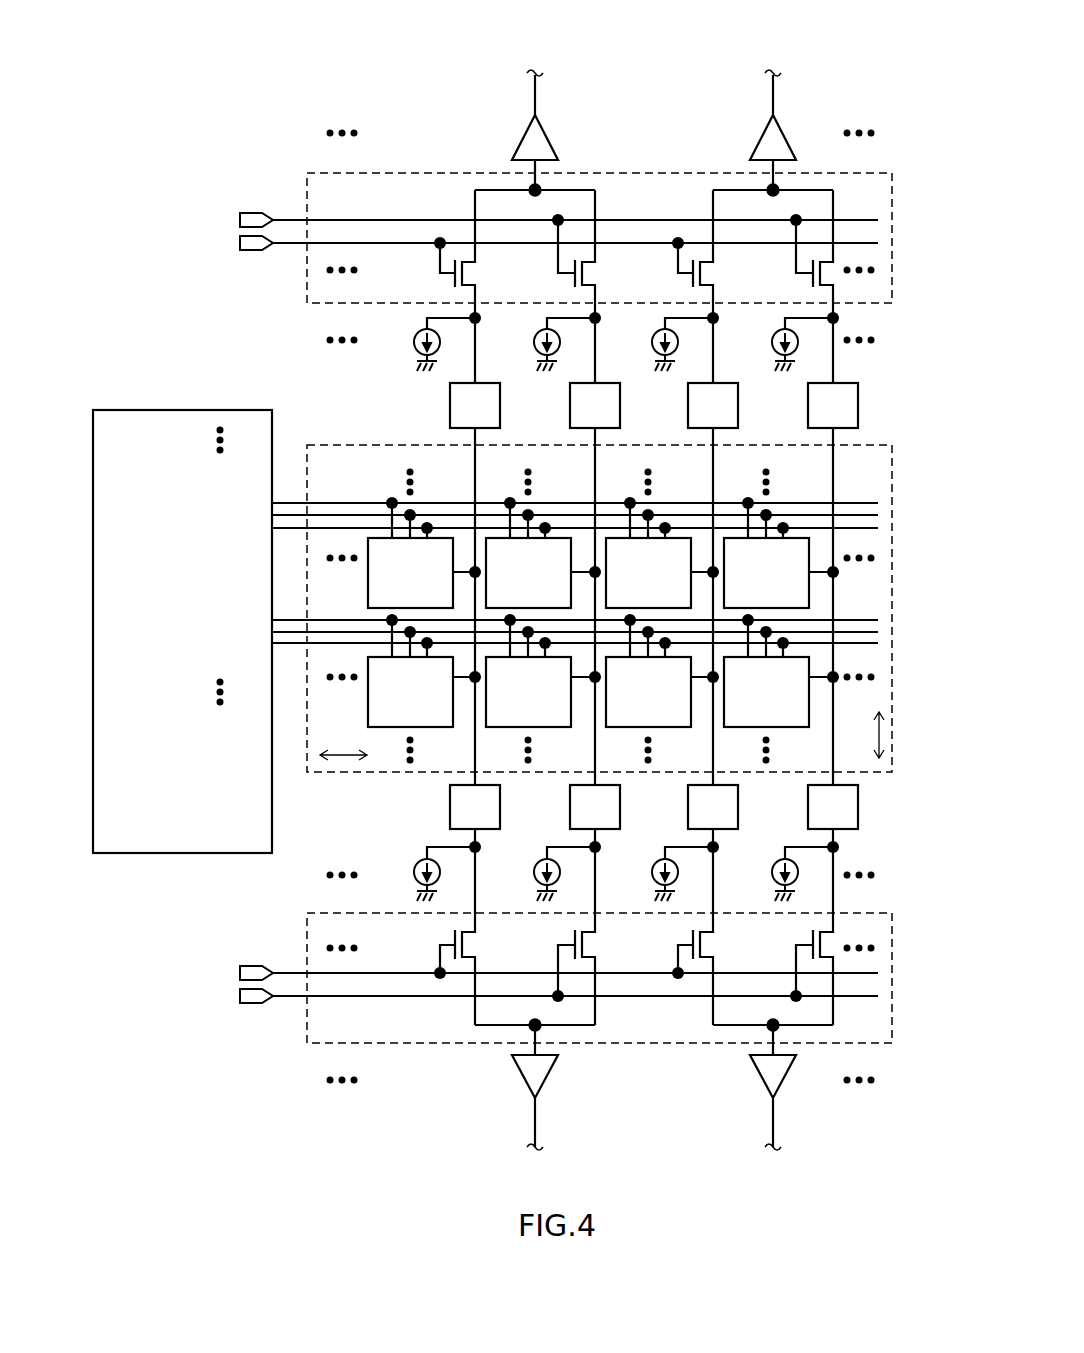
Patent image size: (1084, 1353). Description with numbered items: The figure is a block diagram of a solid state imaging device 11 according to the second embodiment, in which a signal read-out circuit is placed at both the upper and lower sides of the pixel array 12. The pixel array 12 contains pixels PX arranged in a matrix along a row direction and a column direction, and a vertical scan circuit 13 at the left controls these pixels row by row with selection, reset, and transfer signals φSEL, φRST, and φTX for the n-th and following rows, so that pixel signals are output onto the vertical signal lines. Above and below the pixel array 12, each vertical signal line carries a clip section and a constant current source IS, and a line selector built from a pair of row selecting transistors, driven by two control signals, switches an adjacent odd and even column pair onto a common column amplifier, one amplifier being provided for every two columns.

The solid state imaging device 11 is at (149, 150).
The pixel array 12 is at (365, 772).
The vertical scan circuit 13 is at (182, 631).